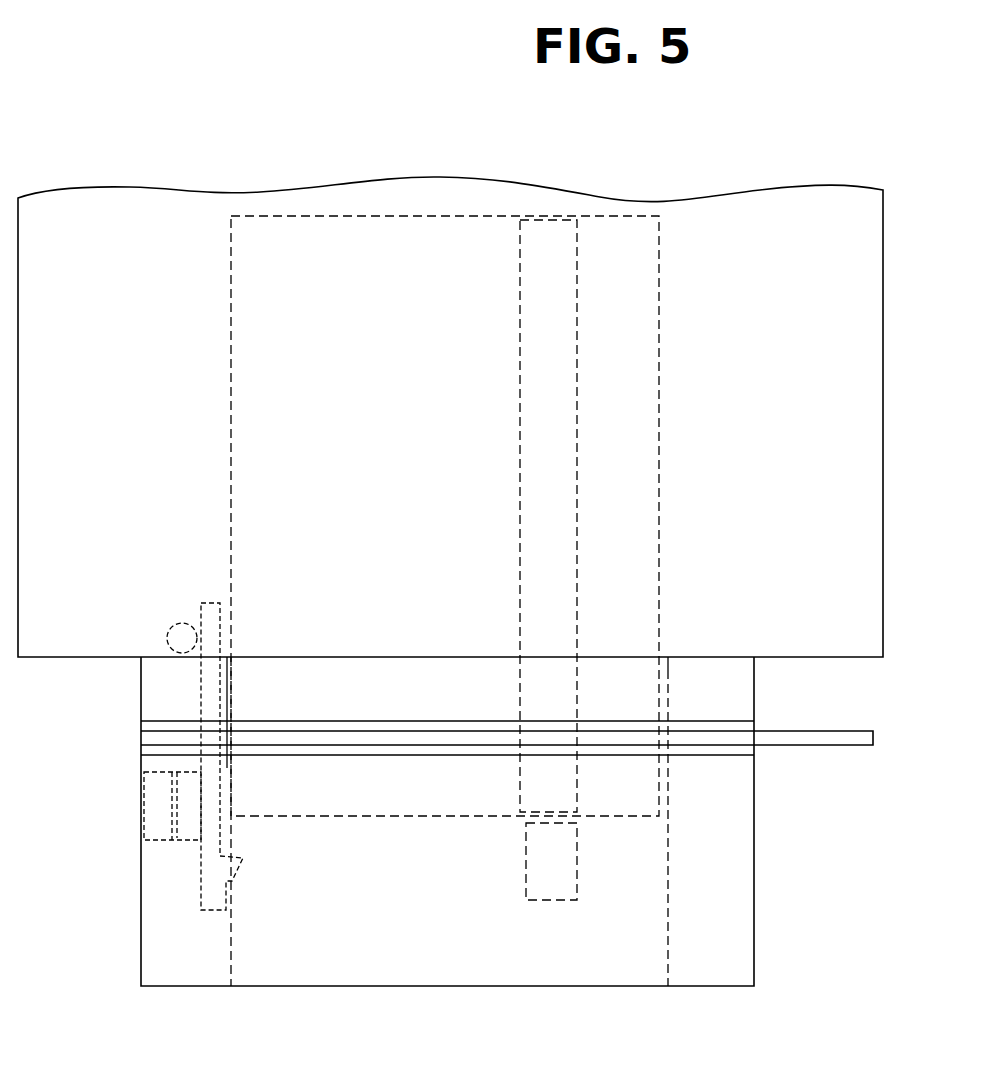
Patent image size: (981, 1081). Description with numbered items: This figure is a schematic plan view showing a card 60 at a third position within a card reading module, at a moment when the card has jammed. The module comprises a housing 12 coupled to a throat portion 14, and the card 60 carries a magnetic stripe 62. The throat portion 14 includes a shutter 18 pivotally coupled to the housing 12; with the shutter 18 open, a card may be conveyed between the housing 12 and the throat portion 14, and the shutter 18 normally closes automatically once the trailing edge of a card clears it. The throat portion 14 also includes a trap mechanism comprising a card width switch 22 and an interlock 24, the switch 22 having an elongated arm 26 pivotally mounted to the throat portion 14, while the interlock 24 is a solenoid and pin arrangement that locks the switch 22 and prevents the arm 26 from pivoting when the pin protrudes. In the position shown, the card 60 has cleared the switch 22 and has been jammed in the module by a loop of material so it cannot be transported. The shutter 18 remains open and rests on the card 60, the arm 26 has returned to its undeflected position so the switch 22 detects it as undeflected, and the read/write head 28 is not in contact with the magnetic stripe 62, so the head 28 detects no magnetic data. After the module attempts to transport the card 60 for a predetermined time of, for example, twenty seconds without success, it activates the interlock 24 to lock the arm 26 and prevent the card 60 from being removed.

The housing 12 is at (97, 205).
The throat portion 14 is at (755, 938).
The shutter 18 is at (824, 745).
The card width switch 22 is at (208, 887).
The interlock 24 is at (176, 626).
The elongated arm 26 is at (155, 801).
The read/write head 28 is at (540, 860).
The card 60 is at (231, 381).
The magnetic stripe 62 is at (540, 398).